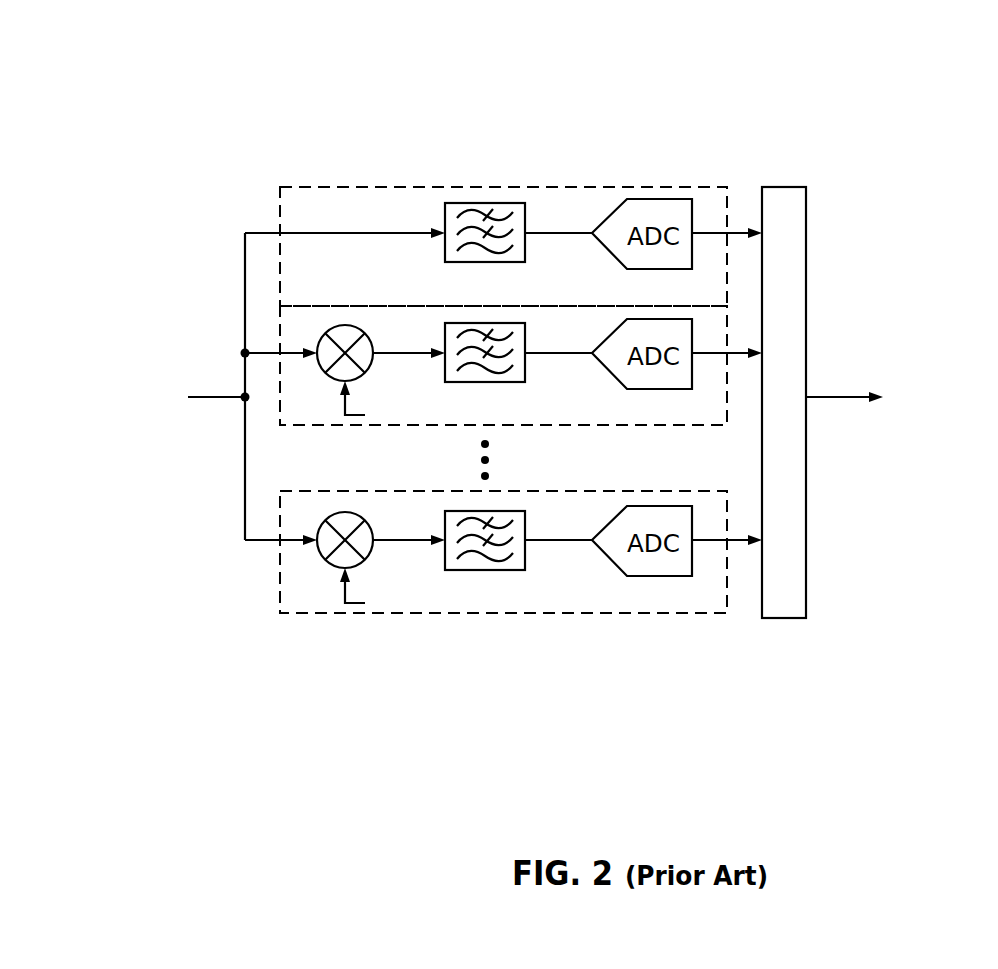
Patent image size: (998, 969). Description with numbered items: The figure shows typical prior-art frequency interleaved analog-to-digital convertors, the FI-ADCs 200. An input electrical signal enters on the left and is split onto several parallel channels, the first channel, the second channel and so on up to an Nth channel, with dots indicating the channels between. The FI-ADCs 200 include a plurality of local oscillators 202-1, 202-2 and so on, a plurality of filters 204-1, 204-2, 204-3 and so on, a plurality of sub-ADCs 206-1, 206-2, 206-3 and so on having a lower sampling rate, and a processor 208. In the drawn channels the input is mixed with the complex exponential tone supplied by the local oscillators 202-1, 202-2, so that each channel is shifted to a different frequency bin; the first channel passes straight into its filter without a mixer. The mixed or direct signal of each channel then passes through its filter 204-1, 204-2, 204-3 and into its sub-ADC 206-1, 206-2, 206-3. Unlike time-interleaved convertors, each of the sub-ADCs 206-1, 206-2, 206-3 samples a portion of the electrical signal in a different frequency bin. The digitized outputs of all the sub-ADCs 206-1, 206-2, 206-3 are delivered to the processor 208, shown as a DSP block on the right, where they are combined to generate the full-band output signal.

The frequency interleaved analog to digital convertors 200 is at (73, 56).
The local oscillator 202-1 is at (318, 330).
The local oscillator 202-2 is at (318, 520).
The filter 204-1 is at (490, 195).
The filter 204-2 is at (530, 330).
The filter 204-3 is at (488, 577).
The sub-ADC 206-1 is at (702, 211).
The sub-ADC 206-2 is at (703, 337).
The sub-ADC 206-3 is at (604, 577).
The processor 208 is at (815, 530).